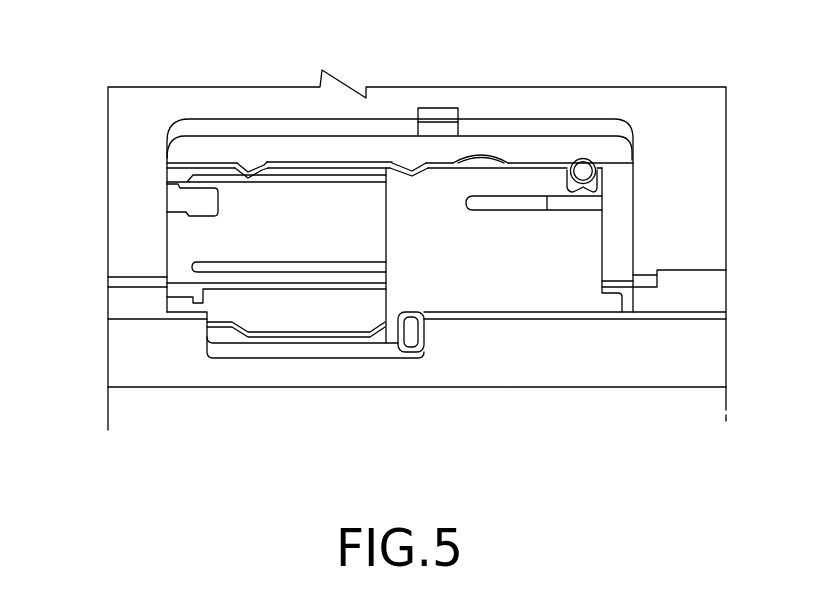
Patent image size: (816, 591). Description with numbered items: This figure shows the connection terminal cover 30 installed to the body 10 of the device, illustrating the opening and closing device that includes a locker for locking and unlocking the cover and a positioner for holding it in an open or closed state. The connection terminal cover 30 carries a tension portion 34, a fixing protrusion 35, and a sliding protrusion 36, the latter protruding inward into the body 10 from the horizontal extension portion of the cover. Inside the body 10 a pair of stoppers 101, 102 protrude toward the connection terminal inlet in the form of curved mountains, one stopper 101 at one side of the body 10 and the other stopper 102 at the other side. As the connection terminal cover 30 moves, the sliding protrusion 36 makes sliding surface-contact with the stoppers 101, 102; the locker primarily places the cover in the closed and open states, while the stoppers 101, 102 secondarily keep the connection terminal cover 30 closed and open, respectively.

The body 10 is at (122, 203).
The connection terminal cover 30 is at (523, 320).
The tension portion 34 is at (533, 180).
The fixing protrusion 35 is at (583, 170).
The sliding protrusion 36 is at (422, 178).
The stopper 101 is at (246, 166).
The stopper 102 is at (410, 165).